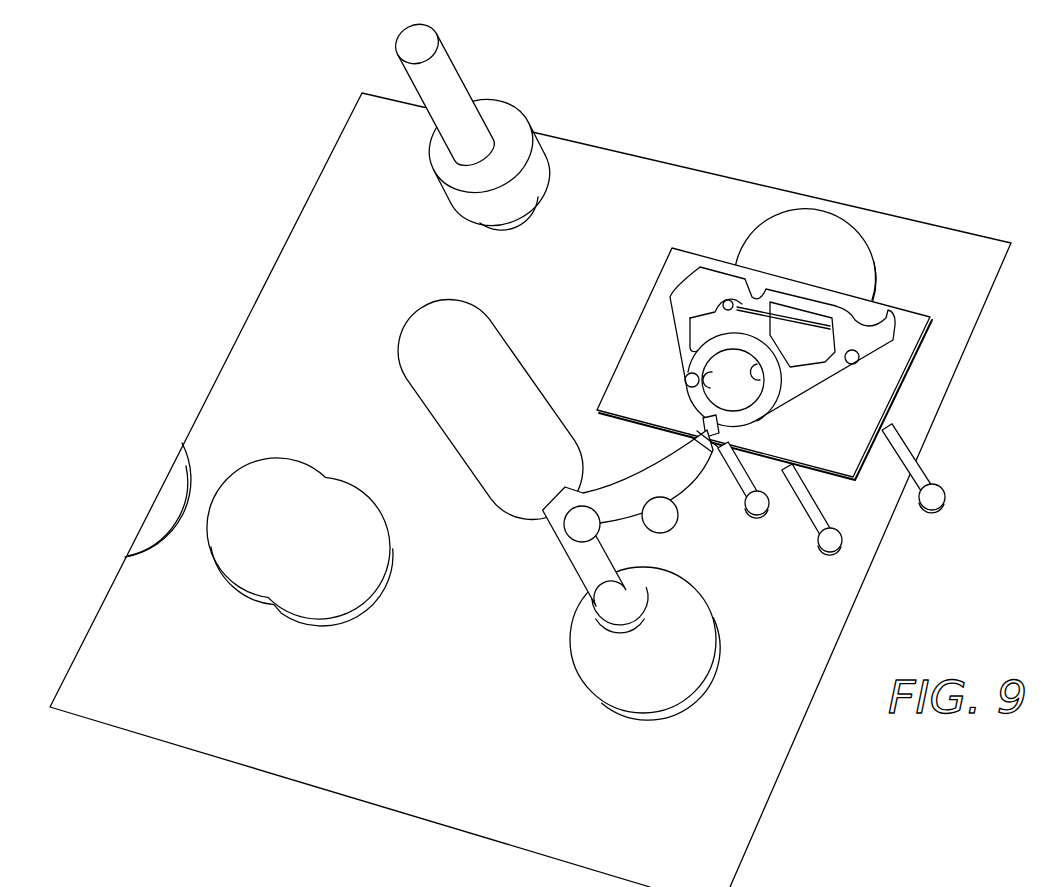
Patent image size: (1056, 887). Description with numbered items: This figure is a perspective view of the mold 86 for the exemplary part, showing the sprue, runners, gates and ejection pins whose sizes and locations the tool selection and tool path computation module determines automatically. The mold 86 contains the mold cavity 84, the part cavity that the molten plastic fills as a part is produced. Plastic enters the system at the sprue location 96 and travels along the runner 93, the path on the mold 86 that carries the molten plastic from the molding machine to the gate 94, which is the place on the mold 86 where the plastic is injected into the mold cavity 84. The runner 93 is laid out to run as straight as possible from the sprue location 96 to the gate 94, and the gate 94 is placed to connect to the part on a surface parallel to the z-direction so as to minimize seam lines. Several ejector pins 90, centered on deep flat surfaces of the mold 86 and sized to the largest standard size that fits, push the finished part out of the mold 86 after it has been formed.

The mold 86 is at (685, 202).
The mold cavity 84 is at (823, 425).
The ejector pins 90 is at (890, 428).
The runner 93 is at (623, 513).
The gate 94 is at (702, 425).
The sprue location 96 is at (590, 567).